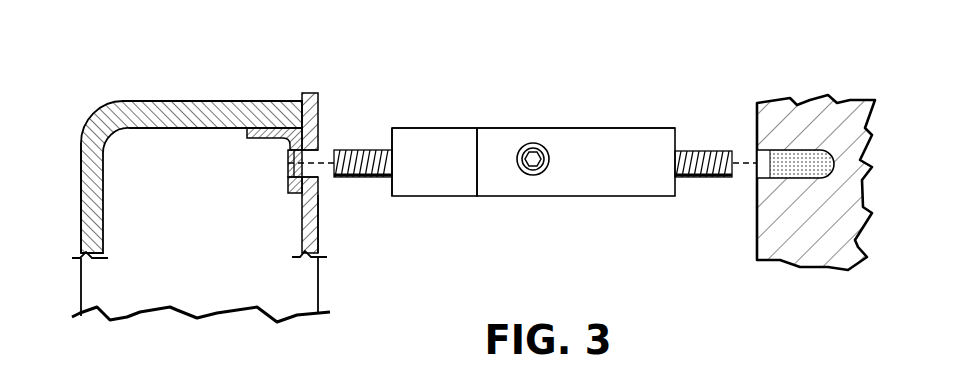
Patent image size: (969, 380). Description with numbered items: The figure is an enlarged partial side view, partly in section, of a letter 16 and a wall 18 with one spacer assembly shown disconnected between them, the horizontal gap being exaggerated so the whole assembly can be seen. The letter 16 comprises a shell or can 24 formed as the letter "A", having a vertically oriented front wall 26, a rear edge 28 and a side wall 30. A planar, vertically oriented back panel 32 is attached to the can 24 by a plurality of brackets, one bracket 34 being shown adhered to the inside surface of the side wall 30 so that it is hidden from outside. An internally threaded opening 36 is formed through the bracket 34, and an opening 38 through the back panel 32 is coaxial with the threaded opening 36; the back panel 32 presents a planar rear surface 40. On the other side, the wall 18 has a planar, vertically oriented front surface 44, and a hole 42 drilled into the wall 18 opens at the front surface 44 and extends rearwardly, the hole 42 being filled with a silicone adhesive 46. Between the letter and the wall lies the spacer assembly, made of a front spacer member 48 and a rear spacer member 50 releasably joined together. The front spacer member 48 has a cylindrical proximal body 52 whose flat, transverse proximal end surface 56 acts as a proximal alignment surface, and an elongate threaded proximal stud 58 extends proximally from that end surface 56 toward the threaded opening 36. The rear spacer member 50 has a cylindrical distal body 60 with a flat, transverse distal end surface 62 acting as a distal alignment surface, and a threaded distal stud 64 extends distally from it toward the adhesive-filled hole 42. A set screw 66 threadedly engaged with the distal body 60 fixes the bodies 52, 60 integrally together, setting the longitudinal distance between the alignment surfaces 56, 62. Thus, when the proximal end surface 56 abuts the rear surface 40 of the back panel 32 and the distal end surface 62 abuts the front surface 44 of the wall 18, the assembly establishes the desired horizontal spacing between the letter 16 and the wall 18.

The letter 16 is at (156, 66).
The wall 18 is at (835, 102).
The can 24 is at (82, 137).
The front wall 26 is at (78, 209).
The rear edge 28 is at (320, 283).
The side wall 30 is at (213, 101).
The back panel 32 is at (324, 97).
The bracket 34 is at (250, 140).
The internally threaded opening 36 is at (288, 172).
The opening 38 is at (310, 172).
The rear surface 40 is at (320, 217).
The hole 42 is at (757, 172).
The front surface 44 is at (757, 247).
The silicone adhesive 46 is at (805, 155).
The front spacer member 48 is at (423, 197).
The rear spacer member 50 is at (618, 197).
The proximal spacer member body 52 is at (442, 128).
The proximal end surface 56 is at (392, 133).
The threaded proximal stud 58 is at (358, 148).
The distal spacer member body 60 is at (588, 128).
The distal end surface 62 is at (677, 138).
The threaded distal stud 64 is at (687, 180).
The set screw 66 is at (530, 173).